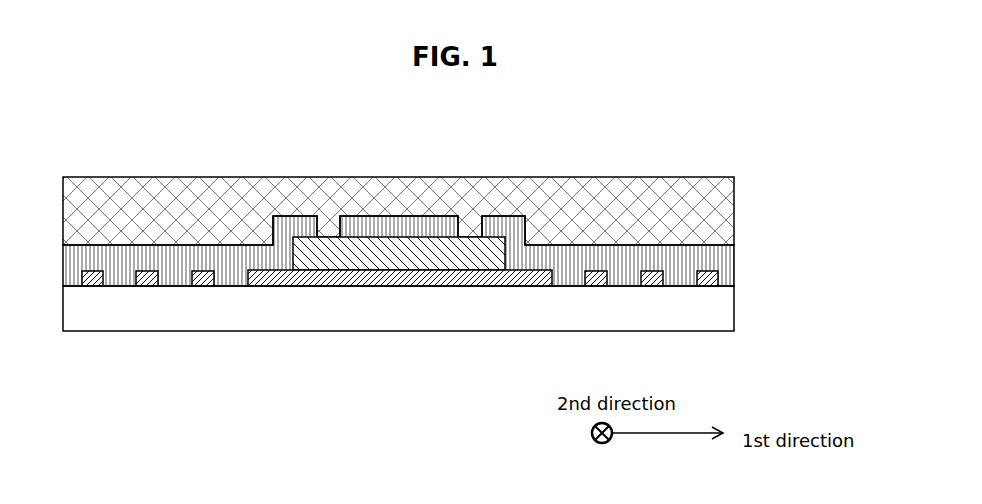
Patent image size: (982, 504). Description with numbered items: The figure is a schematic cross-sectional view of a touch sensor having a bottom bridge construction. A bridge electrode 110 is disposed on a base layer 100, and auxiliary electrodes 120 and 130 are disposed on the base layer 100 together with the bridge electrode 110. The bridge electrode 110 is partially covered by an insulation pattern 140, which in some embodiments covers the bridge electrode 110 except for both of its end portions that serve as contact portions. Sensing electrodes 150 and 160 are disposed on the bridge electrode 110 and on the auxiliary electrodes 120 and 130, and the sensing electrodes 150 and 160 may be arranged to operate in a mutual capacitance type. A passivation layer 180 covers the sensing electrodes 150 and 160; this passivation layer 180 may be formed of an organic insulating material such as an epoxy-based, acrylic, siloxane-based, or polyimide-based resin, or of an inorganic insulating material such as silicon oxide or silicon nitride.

The base layer 100 is at (728, 310).
The bridge electrode 110 is at (470, 288).
The auxiliary electrode 120 is at (400, 328).
The auxiliary electrode 130 is at (193, 287).
The insulation pattern 140 is at (388, 287).
The sensing electrode 150 is at (730, 266).
The sensing electrode 160 is at (405, 217).
The passivation layer 180 is at (730, 212).